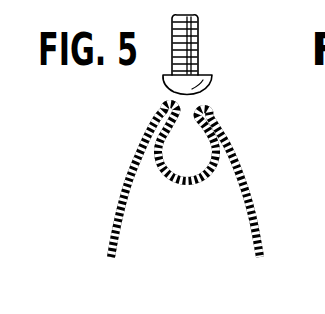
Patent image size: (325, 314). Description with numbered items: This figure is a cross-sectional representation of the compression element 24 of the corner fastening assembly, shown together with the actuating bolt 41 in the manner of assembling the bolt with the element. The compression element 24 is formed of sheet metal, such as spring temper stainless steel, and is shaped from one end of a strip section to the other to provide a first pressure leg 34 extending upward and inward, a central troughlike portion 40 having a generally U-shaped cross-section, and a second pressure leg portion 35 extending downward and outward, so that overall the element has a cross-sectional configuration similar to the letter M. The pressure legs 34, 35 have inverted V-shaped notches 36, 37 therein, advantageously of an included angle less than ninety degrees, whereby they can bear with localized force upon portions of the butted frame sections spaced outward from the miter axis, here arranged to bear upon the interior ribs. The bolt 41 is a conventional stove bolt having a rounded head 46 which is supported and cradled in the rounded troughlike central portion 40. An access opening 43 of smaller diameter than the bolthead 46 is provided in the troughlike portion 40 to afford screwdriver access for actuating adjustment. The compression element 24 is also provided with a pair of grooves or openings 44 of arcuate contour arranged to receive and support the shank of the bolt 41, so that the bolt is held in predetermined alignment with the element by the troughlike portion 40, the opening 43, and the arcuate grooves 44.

The compression element 24 is at (240, 142).
The first pressure leg 34 is at (130, 166).
The second pressure leg portion 35 is at (243, 174).
The inverted V-shaped notch 36 is at (119, 204).
The inverted V-shaped notch 37 is at (256, 212).
The central troughlike portion 40 is at (218, 112).
The bolt 41 is at (199, 46).
The access opening 43 is at (184, 183).
The arcuate grooves 44 is at (167, 99).
The rounded head 46 is at (208, 80).